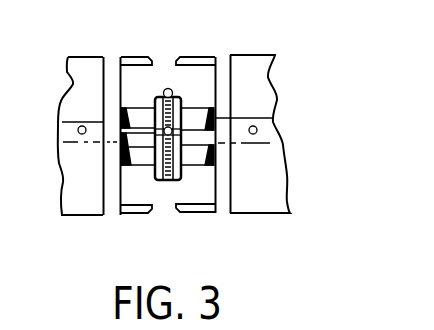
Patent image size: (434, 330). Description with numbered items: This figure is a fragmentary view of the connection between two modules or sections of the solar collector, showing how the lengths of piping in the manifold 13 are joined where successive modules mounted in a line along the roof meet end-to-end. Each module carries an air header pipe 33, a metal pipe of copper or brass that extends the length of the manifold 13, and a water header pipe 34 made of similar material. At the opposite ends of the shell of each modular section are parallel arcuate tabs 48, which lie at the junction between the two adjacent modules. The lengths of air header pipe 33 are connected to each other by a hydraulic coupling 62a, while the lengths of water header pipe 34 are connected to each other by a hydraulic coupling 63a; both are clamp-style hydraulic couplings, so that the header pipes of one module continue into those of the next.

The manifold 13 is at (97, 185).
The air header pipe 33 is at (140, 157).
The water header pipe 34 is at (200, 118).
The parallel arcuate tabs 48 is at (185, 60).
The hydraulic coupling 63a is at (155, 103).
The hydraulic coupling 62a is at (187, 168).